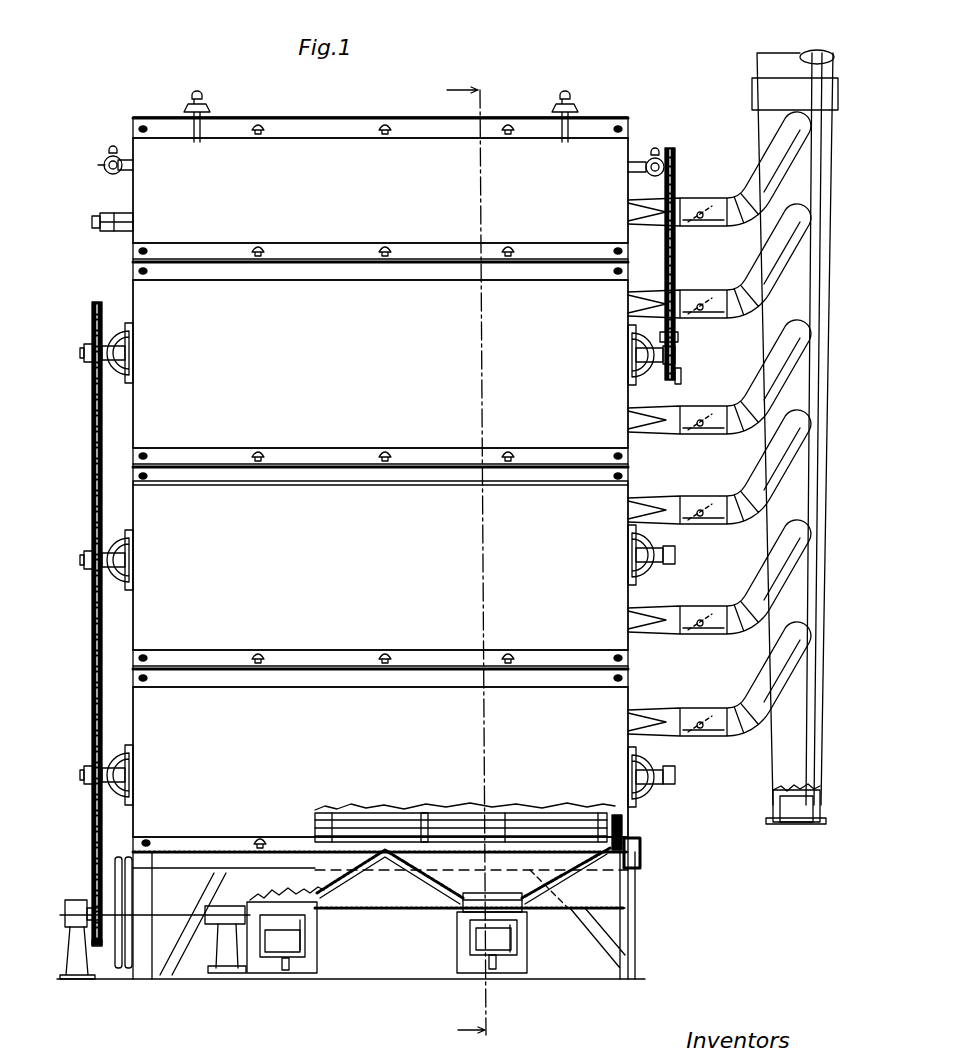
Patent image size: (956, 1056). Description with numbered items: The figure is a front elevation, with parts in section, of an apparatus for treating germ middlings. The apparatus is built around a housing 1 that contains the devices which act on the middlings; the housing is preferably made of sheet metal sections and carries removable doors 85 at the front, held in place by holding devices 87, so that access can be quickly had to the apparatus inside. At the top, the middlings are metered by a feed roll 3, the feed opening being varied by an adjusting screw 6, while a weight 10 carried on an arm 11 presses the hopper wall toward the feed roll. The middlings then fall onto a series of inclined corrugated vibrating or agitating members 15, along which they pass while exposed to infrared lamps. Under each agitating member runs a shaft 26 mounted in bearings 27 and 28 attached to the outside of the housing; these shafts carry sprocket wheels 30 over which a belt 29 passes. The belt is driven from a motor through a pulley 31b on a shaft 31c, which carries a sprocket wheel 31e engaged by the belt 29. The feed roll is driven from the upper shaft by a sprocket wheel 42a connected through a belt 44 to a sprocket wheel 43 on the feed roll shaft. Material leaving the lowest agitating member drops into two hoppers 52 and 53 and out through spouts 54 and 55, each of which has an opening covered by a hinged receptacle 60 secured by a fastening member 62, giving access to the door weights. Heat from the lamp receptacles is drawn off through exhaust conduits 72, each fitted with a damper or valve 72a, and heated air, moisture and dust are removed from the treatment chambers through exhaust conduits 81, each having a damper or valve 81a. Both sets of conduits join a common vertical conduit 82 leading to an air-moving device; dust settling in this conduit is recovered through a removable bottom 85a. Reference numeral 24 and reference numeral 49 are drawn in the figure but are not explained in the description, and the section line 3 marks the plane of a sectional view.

The housing 1 is at (332, 151).
The feed roll 3 is at (472, 558).
The adjusting screw 6 is at (191, 102).
The weight 10 is at (105, 172).
The arm 11 is at (104, 163).
The vibrating or agitating member 15 is at (530, 826).
The bracket 24 is at (640, 832).
The shaft 26 is at (88, 364).
The bearing 27 is at (630, 370).
The bearing 28 is at (128, 358).
The belt 29 is at (92, 452).
The sprocket wheel 30 is at (92, 314).
The pulley 31b is at (115, 872).
The shaft 31c is at (70, 906).
The sprocket wheel 31e is at (100, 946).
The sprocket wheel 42a is at (682, 378).
The sprocket wheel 43 is at (673, 150).
The belt 44 is at (680, 338).
The divider 49 is at (428, 832).
The hopper 52 is at (335, 880).
The hopper 53 is at (457, 873).
The spout 54 is at (527, 962).
The spout 55 is at (262, 962).
The hinged receptacle 60 is at (300, 950).
The fastening member 62 is at (286, 972).
The exhaust conduit 72 is at (718, 200).
The damper or valve 72a is at (699, 212).
The exhaust conduit 81 is at (688, 292).
The damper or valve 81a is at (700, 304).
The conduit 82 is at (757, 112).
The removable door 85 is at (380, 487).
The removable bottom 85a is at (800, 824).
The holding device 87 is at (385, 243).